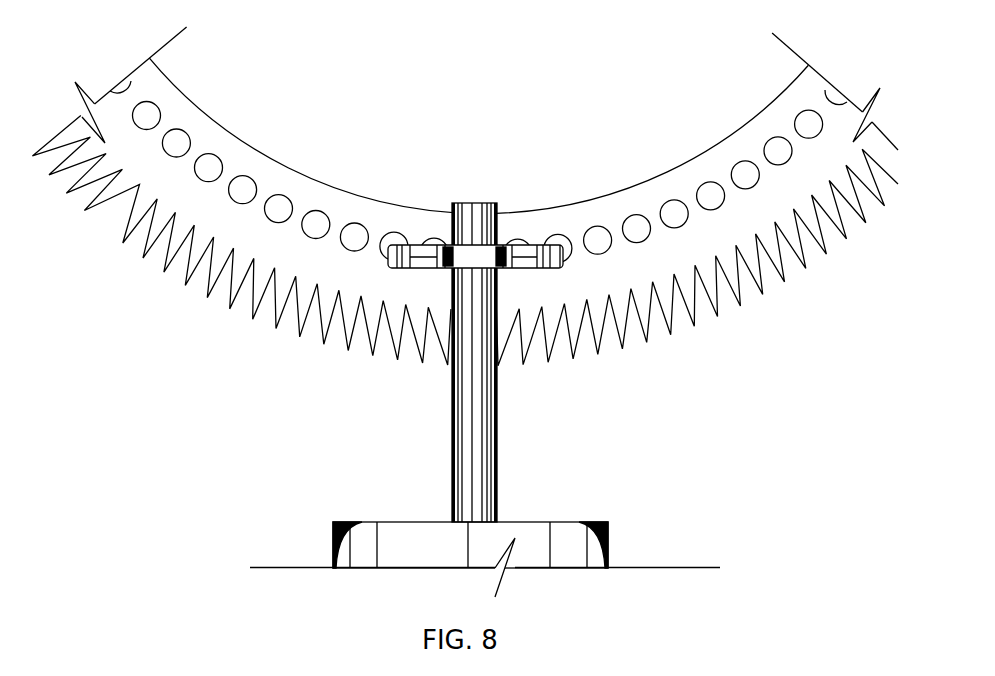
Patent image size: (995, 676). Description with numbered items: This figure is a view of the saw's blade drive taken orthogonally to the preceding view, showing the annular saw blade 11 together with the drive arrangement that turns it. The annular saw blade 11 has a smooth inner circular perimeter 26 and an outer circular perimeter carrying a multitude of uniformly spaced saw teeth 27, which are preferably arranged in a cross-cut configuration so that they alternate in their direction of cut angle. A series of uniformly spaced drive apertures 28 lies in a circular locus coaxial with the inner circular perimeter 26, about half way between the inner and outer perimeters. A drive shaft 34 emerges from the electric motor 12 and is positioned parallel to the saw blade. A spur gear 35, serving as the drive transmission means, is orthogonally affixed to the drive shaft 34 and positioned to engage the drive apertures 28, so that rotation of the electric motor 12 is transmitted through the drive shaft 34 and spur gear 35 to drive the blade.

The annular saw blade 11 is at (251, 143).
The electric motor 12 is at (428, 556).
The inner circular perimeter 26 is at (319, 179).
The saw teeth 27 is at (321, 352).
The drive apertures 28 is at (708, 179).
The drive shaft 34 is at (456, 200).
The spur gear 35 is at (533, 243).